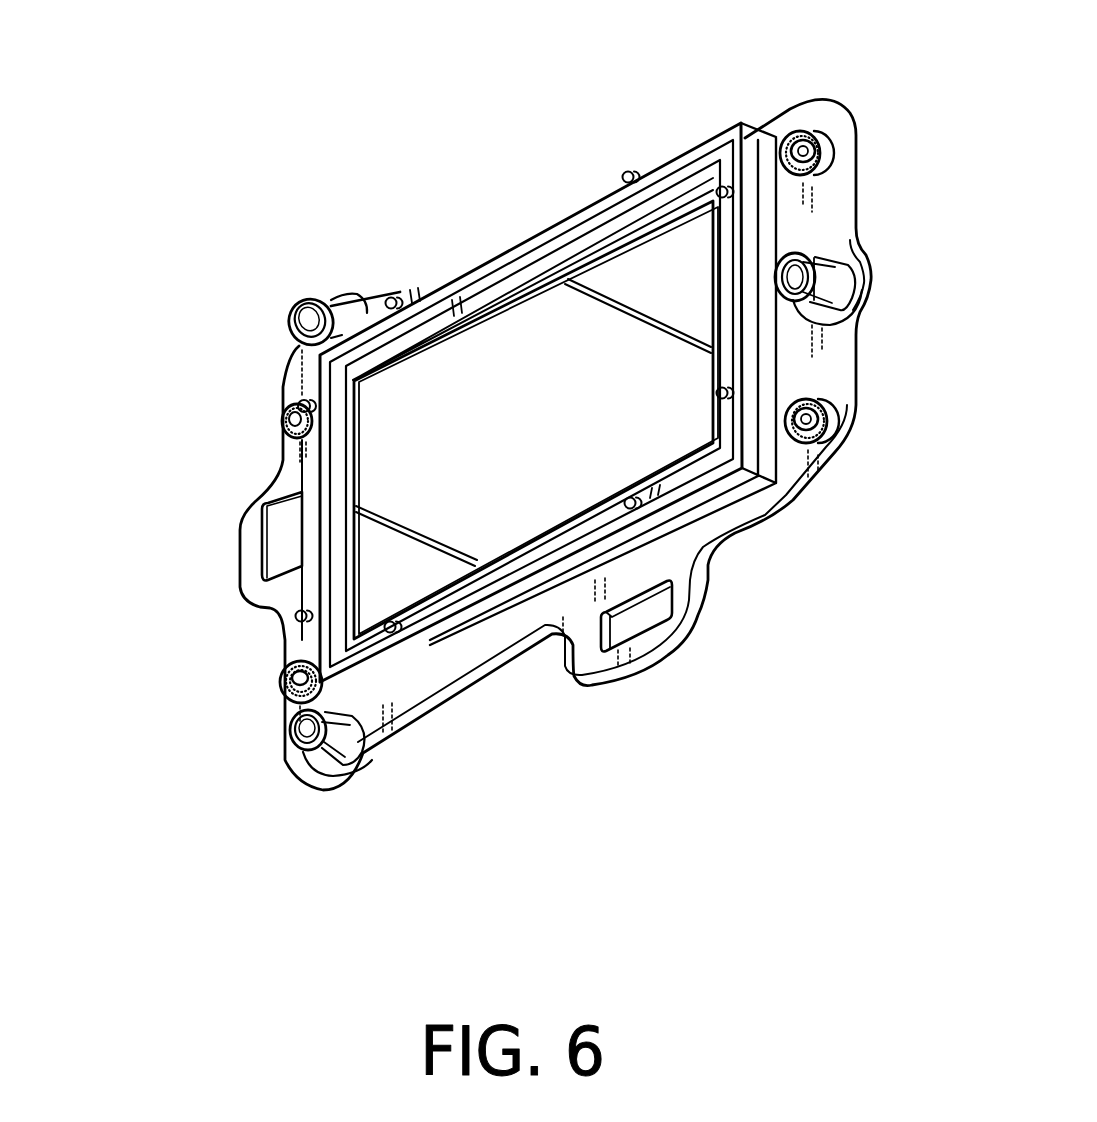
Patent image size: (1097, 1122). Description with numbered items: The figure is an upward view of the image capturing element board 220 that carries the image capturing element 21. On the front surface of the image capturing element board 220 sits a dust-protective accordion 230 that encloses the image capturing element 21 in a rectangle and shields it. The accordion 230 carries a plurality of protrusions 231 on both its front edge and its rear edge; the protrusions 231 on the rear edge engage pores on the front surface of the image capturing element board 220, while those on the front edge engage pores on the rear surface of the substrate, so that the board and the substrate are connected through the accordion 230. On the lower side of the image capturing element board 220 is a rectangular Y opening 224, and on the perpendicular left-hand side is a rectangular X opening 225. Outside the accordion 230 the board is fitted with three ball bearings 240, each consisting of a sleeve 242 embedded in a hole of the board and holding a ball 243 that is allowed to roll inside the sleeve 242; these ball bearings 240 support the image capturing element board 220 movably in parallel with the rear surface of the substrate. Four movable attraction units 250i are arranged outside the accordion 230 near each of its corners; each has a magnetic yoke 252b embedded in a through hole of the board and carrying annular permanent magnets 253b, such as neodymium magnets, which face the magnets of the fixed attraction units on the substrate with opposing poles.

The image capturing element 21 is at (577, 280).
The image capturing element board 220 is at (587, 662).
The rectangular Y opening 224 is at (643, 625).
The rectangular X opening 225 is at (280, 547).
The dust-protective accordion 230 is at (492, 266).
The protrusions 231 is at (720, 186).
The ball bearings 240 is at (327, 286).
The sleeve 242 is at (828, 285).
The ball 243 is at (290, 318).
The movable attraction units 250i is at (507, 368).
The magnetic yoke 252b is at (790, 140).
The annular permanent magnets 253b is at (812, 132).